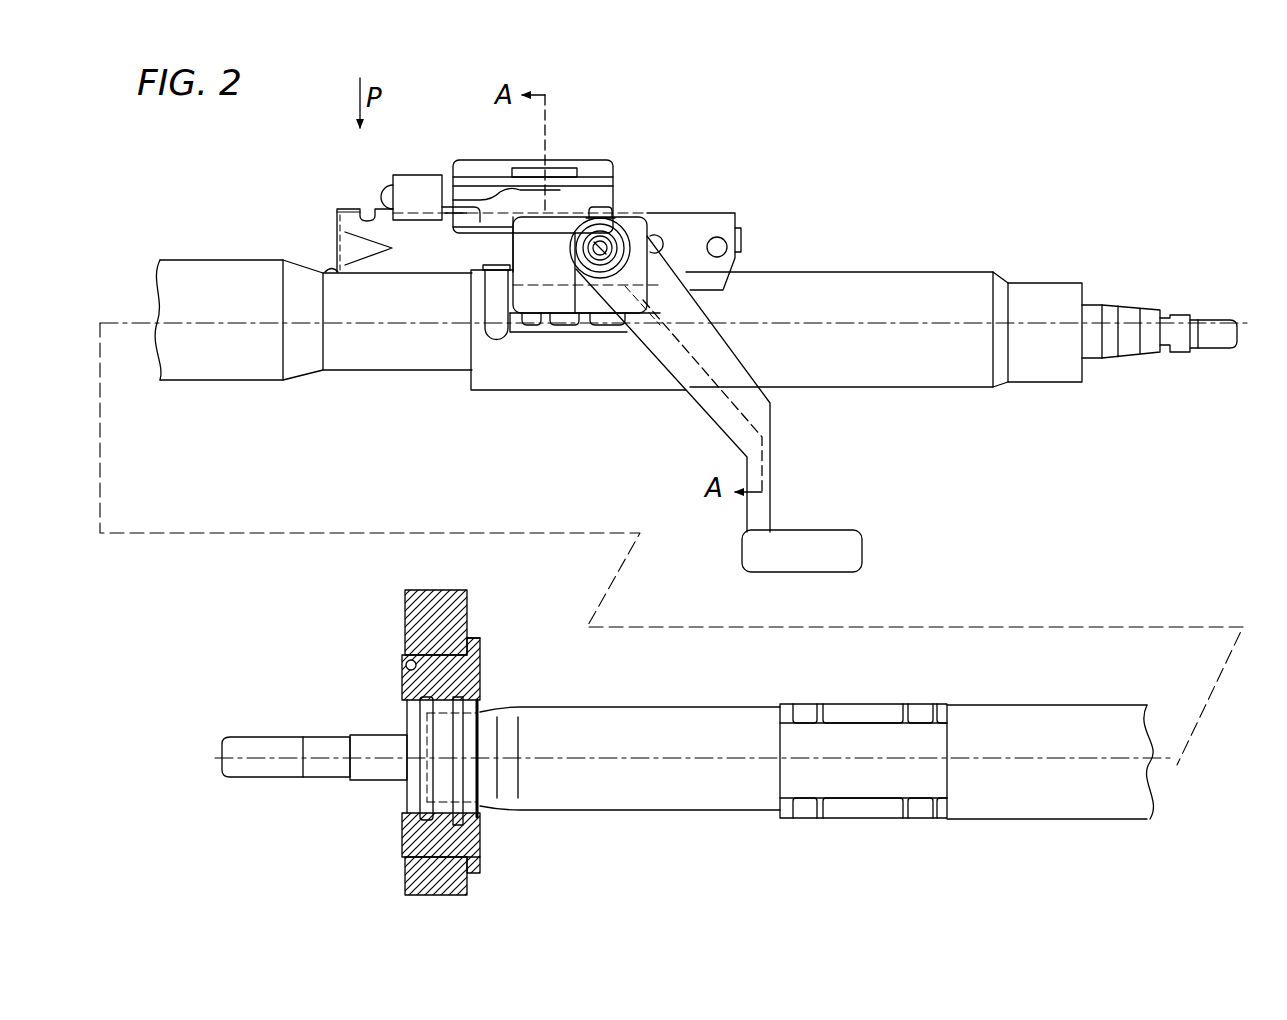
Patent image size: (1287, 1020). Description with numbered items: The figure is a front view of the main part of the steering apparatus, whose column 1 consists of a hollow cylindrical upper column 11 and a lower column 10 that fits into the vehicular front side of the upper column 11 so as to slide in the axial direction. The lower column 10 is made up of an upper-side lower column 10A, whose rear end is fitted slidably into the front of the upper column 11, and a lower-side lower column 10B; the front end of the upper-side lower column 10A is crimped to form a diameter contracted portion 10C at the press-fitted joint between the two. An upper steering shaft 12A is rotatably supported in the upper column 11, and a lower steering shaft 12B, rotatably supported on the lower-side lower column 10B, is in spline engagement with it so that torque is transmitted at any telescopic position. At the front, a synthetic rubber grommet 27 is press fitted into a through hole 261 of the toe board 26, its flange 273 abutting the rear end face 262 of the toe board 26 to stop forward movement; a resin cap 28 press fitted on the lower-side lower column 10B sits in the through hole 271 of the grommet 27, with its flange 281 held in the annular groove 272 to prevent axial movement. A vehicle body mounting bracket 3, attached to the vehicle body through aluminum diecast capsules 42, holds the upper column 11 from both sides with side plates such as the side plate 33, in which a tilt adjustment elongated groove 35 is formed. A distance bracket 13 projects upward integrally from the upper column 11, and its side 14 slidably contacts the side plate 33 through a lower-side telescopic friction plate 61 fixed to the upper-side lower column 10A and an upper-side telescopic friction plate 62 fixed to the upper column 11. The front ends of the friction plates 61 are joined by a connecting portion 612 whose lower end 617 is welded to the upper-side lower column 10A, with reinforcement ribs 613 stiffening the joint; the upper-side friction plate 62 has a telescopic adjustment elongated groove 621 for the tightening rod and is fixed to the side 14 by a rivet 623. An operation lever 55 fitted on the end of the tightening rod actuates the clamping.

The column 1 is at (800, 246).
The vehicle body mounting bracket 3 is at (487, 147).
The lower column 10 is at (237, 238).
The upper-side lower column 10A is at (181, 280).
The lower-side lower column 10B is at (633, 716).
The diameter contracted portion 10C is at (870, 705).
The upper column 11 is at (908, 282).
The upper steering shaft 12A is at (1130, 305).
The lower steering shaft 12B is at (267, 745).
The distance bracket 13 is at (533, 335).
The side of distance bracket 14 is at (724, 290).
The toe board 26 is at (432, 590).
The through hole 261 is at (407, 656).
The end face 262 is at (470, 618).
The grommet 27 is at (400, 688).
The through hole 271 is at (480, 700).
The annular groove 272 is at (465, 820).
The flange 273 is at (472, 858).
The cap 28 is at (420, 810).
The flange 281 is at (470, 740).
The side plate 33 is at (566, 305).
The tilt adjustment elongated groove 35 is at (599, 207).
The capsule 42 is at (521, 168).
The operation lever 55 is at (760, 513).
The lower-side telescopic friction plate 61 is at (352, 217).
The connecting portion 612 is at (337, 211).
The reinforcement rib 613 is at (352, 241).
The lower end 617 is at (330, 270).
The upper-side telescopic friction plate 62 is at (690, 222).
The telescopic adjustment elongated groove 621 is at (660, 240).
The rivet 623 is at (716, 236).